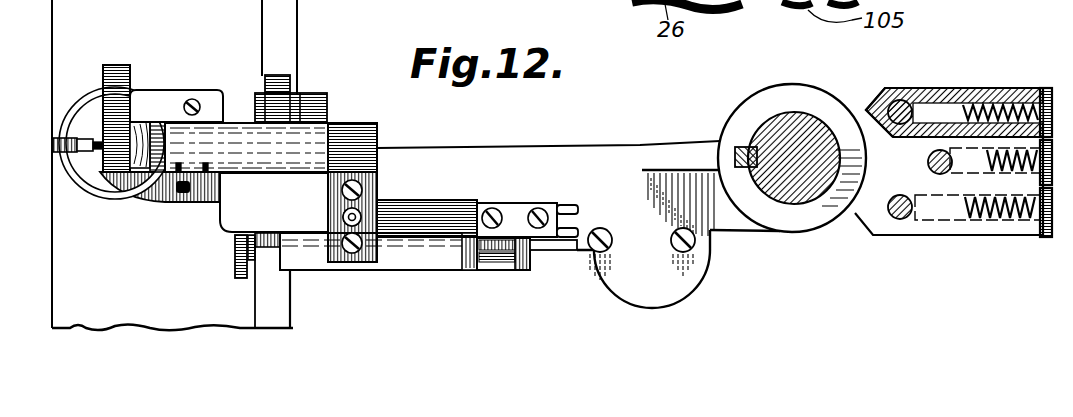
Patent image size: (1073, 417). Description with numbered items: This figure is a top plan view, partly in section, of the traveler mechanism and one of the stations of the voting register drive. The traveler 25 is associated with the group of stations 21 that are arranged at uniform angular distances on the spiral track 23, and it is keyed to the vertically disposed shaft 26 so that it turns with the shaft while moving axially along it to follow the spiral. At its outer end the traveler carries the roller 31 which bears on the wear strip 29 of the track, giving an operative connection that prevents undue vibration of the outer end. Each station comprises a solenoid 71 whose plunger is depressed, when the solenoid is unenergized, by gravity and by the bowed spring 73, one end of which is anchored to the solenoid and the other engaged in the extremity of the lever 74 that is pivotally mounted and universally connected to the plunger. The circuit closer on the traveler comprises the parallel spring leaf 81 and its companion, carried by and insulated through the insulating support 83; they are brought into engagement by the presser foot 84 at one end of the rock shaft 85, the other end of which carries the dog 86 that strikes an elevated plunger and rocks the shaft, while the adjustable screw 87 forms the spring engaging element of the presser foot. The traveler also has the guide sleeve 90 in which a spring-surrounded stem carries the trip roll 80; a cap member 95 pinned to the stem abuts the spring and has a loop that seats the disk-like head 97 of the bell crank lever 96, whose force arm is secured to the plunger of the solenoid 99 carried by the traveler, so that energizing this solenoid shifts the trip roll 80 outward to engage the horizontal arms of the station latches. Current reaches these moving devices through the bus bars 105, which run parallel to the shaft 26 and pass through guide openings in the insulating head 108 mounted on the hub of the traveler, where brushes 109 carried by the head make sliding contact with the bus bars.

The stations 21 is at (70, 104).
The spiral track 23 is at (62, 285).
The traveler 25 is at (549, 148).
The shaft 26 is at (792, 192).
The wear strip 29 is at (297, 53).
The roller 31 is at (262, 75).
The solenoid 71 is at (117, 183).
The spring 73 is at (53, 148).
The lever 74 is at (90, 152).
The trip roll 80 is at (234, 256).
The spring leaf 81 is at (445, 213).
The insulating support 83 is at (522, 212).
The presser foot 84 is at (379, 199).
The rock shaft 85 is at (316, 140).
The dog 86 is at (132, 75).
The adjustable screw 87 is at (343, 217).
The guide sleeve 90 is at (415, 257).
The cap member 95 is at (472, 270).
The bell crank lever 96 is at (562, 251).
The disk-like head 97 is at (502, 250).
The solenoid 99 is at (692, 288).
The bus bars 105 is at (915, 90).
The head 108 is at (867, 122).
The brushes 109 is at (952, 118).